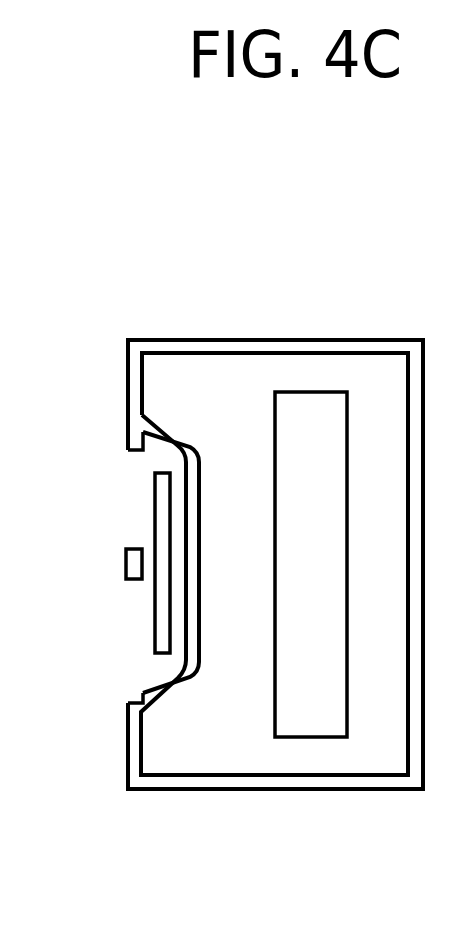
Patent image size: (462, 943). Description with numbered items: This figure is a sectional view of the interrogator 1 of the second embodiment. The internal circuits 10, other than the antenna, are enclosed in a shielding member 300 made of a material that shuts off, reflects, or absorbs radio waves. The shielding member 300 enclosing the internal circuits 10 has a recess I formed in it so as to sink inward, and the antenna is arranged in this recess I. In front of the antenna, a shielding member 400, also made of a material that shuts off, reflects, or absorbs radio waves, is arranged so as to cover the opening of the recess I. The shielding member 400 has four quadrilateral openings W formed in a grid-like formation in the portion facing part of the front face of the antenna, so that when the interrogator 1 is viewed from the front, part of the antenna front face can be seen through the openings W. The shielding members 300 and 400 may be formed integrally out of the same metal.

The interrogator 1 is at (440, 285).
The internal circuits 10 is at (330, 572).
The shielding member 300 is at (360, 783).
The shielding member 400 is at (130, 437).
The openings W is at (136, 514).
The recess I is at (160, 458).